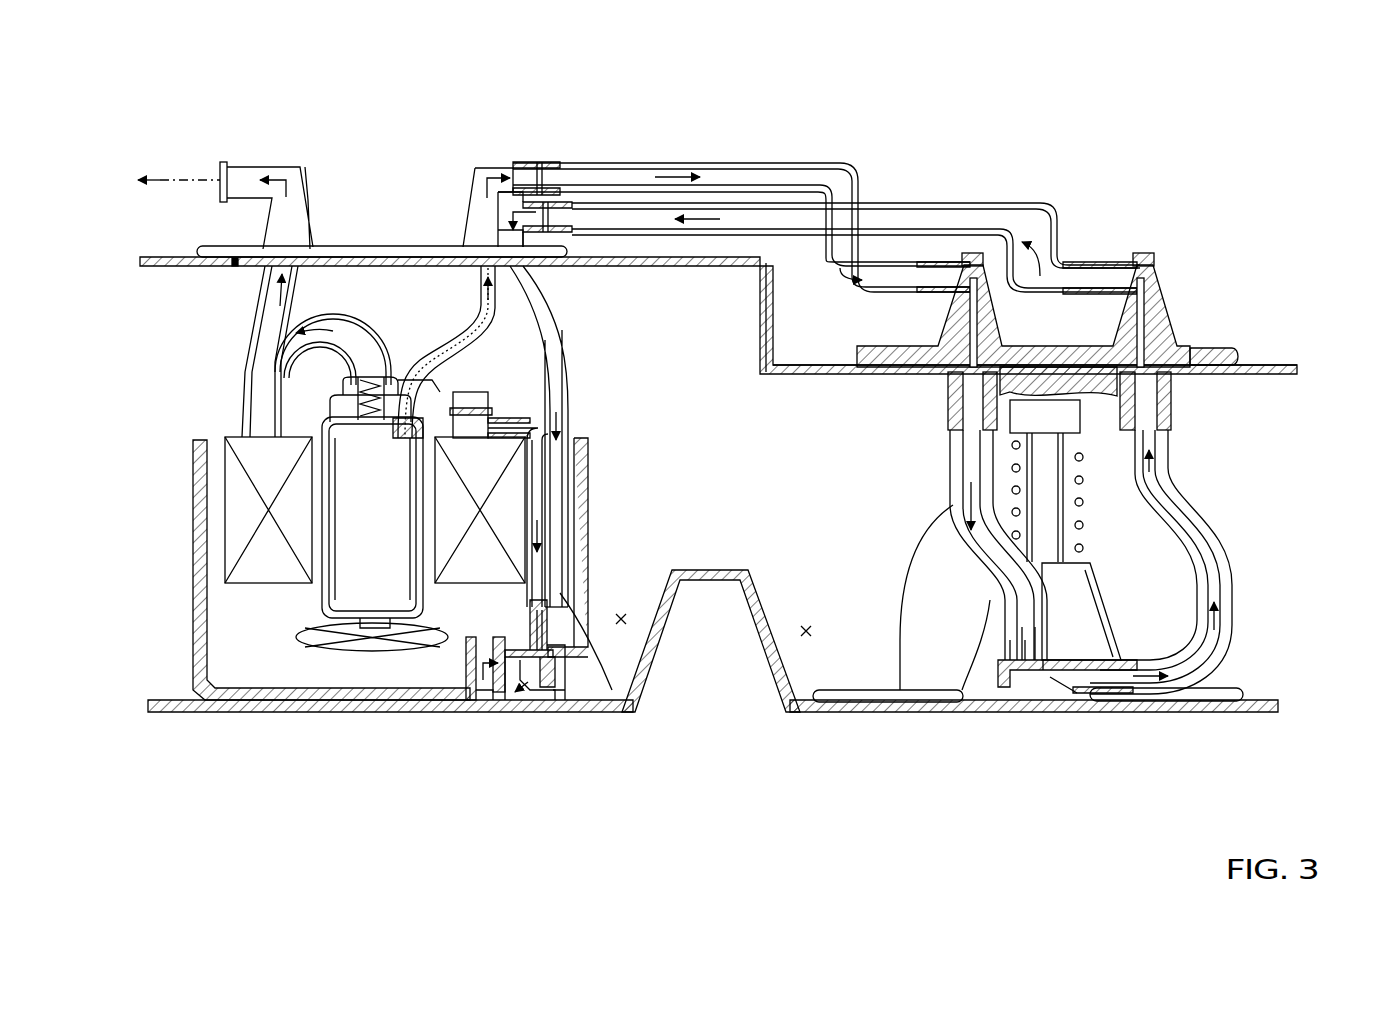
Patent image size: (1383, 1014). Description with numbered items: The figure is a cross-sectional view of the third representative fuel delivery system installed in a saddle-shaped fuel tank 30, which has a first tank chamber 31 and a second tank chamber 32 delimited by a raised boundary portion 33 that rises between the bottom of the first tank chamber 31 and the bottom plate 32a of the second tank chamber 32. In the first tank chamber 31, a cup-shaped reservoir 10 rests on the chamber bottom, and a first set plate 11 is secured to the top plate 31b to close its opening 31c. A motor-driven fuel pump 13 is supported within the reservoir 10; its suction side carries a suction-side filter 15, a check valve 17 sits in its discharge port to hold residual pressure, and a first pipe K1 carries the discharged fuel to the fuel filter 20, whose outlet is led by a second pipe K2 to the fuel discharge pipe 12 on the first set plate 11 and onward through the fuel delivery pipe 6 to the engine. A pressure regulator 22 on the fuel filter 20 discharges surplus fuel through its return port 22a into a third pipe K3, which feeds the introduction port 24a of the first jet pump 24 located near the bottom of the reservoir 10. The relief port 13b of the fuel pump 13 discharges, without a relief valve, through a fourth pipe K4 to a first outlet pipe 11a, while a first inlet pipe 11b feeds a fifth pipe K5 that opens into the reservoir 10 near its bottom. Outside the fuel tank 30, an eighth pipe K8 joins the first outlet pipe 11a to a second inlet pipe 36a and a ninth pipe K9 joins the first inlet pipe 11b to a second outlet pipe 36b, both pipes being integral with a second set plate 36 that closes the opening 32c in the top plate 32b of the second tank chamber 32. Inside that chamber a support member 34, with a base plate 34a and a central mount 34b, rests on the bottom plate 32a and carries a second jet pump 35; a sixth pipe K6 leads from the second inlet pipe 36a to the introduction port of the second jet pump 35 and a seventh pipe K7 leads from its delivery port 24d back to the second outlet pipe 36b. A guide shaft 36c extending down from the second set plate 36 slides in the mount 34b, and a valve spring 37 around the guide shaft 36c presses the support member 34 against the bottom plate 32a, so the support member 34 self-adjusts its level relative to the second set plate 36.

The fuel delivery pipe 6 is at (189, 178).
The fuel discharge pipe 12 is at (287, 167).
The first set plate 11 is at (345, 245).
The first outlet pipe 11a is at (488, 166).
The first inlet pipe 11b is at (530, 202).
The eighth pipe K8 is at (740, 165).
The ninth pipe K9 is at (914, 216).
The second inlet pipe 36a is at (989, 312).
The second outlet pipe 36b is at (1150, 298).
The opening 32c is at (1205, 348).
The fuel tank 30 is at (1257, 364).
The pressure regulator 22 is at (400, 368).
The fourth pipe K4 is at (466, 385).
The return port 22a is at (468, 300).
The top plate 31b is at (178, 256).
The opening 31c is at (238, 267).
The second pipe K2 is at (262, 325).
The check valve 17 is at (340, 398).
The first pipe K1 is at (262, 414).
The fuel filter 20 is at (225, 499).
The fuel pump 13 is at (330, 532).
The reservoir 10 is at (196, 623).
The suction-side filter 15 is at (356, 650).
The relief port 13b is at (396, 417).
The delivery port 24d is at (471, 650).
The first jet pump 24 is at (543, 690).
The introduction port 24a is at (548, 645).
The fifth pipe K5 is at (560, 593).
The first tank chamber 31 is at (621, 624).
The third pipe K3 is at (538, 500).
The boundary portion 33 is at (723, 582).
The second tank chamber 32 is at (806, 636).
The bottom plate 32a is at (835, 713).
The top plate 32b is at (794, 362).
The second set plate 36 is at (1039, 352).
The guide shaft 36c is at (1050, 465).
The valve spring 37 is at (1085, 527).
The seventh pipe K7 is at (1212, 527).
The mount 34b is at (1085, 592).
The support member 34 is at (1122, 645).
The base plate 34a is at (1245, 696).
The sixth pipe K6 is at (902, 640).
The second jet pump 35 is at (995, 692).